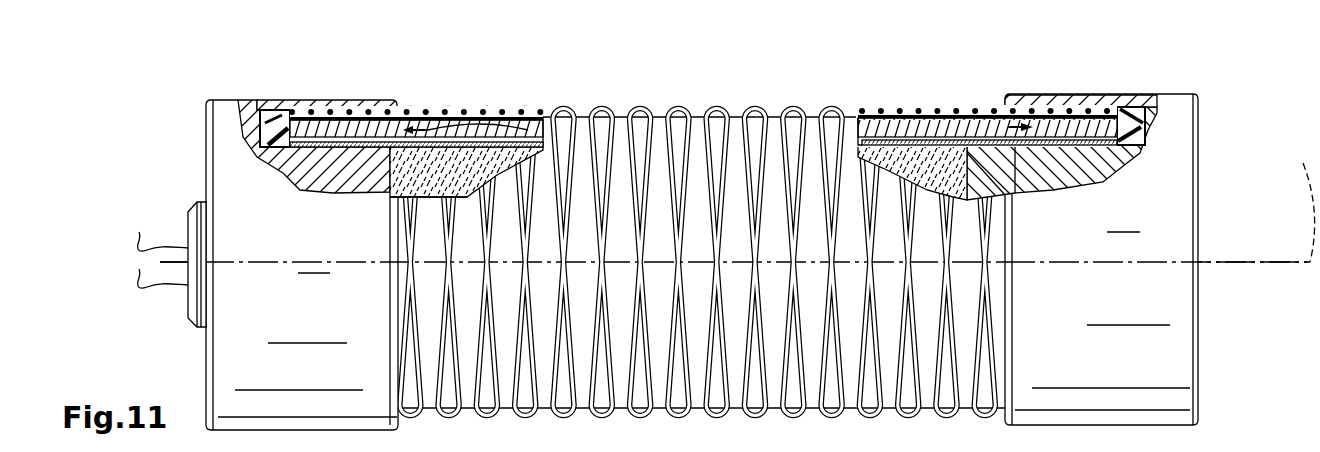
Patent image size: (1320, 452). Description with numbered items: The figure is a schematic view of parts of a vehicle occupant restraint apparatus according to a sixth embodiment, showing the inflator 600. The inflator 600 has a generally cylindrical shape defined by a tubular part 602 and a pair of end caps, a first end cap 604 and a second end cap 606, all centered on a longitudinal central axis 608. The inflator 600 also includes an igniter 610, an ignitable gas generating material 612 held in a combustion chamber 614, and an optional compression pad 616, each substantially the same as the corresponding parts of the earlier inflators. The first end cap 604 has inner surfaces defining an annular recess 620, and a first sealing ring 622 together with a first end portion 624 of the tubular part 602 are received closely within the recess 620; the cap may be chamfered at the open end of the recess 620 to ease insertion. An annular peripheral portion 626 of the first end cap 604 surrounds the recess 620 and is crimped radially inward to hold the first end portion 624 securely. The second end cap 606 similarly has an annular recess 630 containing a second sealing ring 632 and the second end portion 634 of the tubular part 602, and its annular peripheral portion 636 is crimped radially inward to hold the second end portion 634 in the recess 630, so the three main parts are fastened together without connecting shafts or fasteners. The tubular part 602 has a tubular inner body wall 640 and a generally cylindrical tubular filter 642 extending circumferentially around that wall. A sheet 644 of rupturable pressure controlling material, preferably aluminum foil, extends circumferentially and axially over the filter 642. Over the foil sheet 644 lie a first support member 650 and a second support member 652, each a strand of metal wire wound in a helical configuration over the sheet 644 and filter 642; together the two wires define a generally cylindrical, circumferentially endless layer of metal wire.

The inflator 600 is at (182, 105).
The tubular part 602 is at (677, 108).
The first end cap 604 is at (203, 160).
The second end cap 606 is at (1200, 133).
The longitudinal central axis 608 is at (1296, 201).
The igniter 610 is at (183, 313).
The ignitable gas generating material 612 is at (440, 190).
The combustion chamber 614 is at (500, 173).
The compression pad 616 is at (997, 173).
The annular recess 620 is at (480, 117).
The first sealing ring 622 is at (268, 128).
The first end portion 624 is at (373, 130).
The annular peripheral portion 626 is at (353, 107).
The annular recess 630 is at (1008, 127).
The second sealing ring 632 is at (1132, 108).
The second end portion 634 is at (1063, 110).
The annular peripheral portion 636 is at (1040, 105).
The tubular inner body wall 640 is at (290, 180).
The tubular filter 642 is at (528, 130).
The sheet of rupturable pressure controlling material 644 is at (442, 110).
The first support member 650 is at (553, 108).
The second support member 652 is at (578, 108).